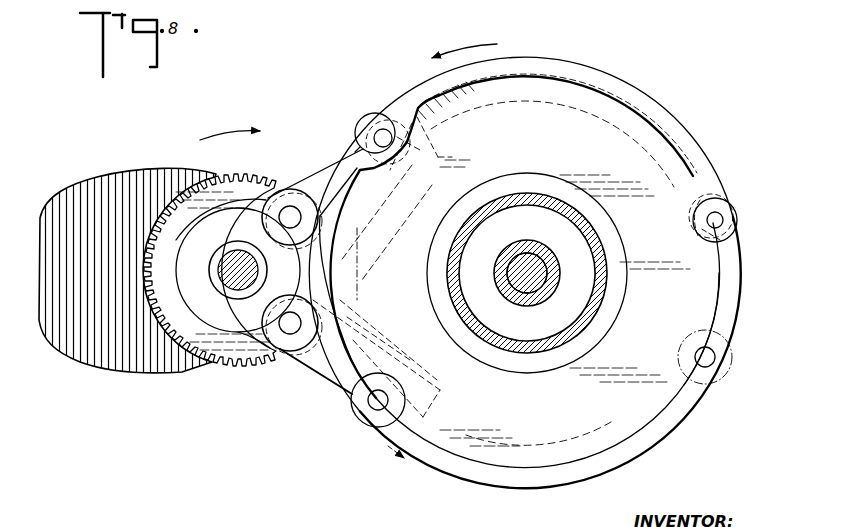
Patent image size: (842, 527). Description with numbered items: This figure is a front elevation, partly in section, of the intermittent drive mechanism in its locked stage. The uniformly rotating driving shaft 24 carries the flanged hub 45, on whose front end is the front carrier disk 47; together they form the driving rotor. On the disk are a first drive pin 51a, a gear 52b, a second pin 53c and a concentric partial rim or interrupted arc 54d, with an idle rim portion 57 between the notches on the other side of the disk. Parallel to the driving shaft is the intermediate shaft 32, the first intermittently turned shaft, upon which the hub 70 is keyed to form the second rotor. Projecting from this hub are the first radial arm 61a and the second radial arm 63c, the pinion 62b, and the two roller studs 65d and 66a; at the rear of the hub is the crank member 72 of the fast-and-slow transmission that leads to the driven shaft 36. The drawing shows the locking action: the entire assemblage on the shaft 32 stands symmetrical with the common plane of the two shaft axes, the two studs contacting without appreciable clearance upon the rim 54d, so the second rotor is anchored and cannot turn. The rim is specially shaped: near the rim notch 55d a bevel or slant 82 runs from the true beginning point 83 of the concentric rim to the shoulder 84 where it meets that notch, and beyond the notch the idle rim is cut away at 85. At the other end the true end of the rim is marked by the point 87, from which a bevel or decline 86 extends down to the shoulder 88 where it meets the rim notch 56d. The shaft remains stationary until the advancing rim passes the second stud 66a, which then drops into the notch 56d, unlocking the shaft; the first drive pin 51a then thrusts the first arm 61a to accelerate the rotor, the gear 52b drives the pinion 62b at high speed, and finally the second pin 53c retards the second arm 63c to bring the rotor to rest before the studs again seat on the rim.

The crank member 72 is at (140, 180).
The pinion 62b is at (216, 366).
The hub 70 is at (196, 233).
The driven shaft 36 is at (238, 270).
The intermediate shaft 32 is at (222, 268).
The second stud 66a is at (290, 200).
The stud 65d is at (288, 352).
The bevel or decline 86 is at (338, 174).
The shoulder 88 is at (355, 150).
The point 87 is at (320, 222).
The rim notch 56d is at (378, 136).
The first drive pin 51a is at (390, 114).
The gear 52b is at (448, 98).
The idle rim portion 57 is at (622, 86).
The front carrier disk 47 is at (538, 284).
The second radial arm 63c is at (440, 158).
The first radial arm 61a is at (392, 180).
The bevel or cut away 85 is at (717, 190).
The second pin 53c is at (728, 200).
The rim notch 55d is at (702, 228).
The shoulder 84 is at (738, 250).
The bevel or slant 82 is at (740, 283).
The true beginning point 83 is at (736, 320).
The locking rim 54d is at (508, 488).
The flanged hub 45 is at (527, 250).
The driving shaft 24 is at (546, 270).